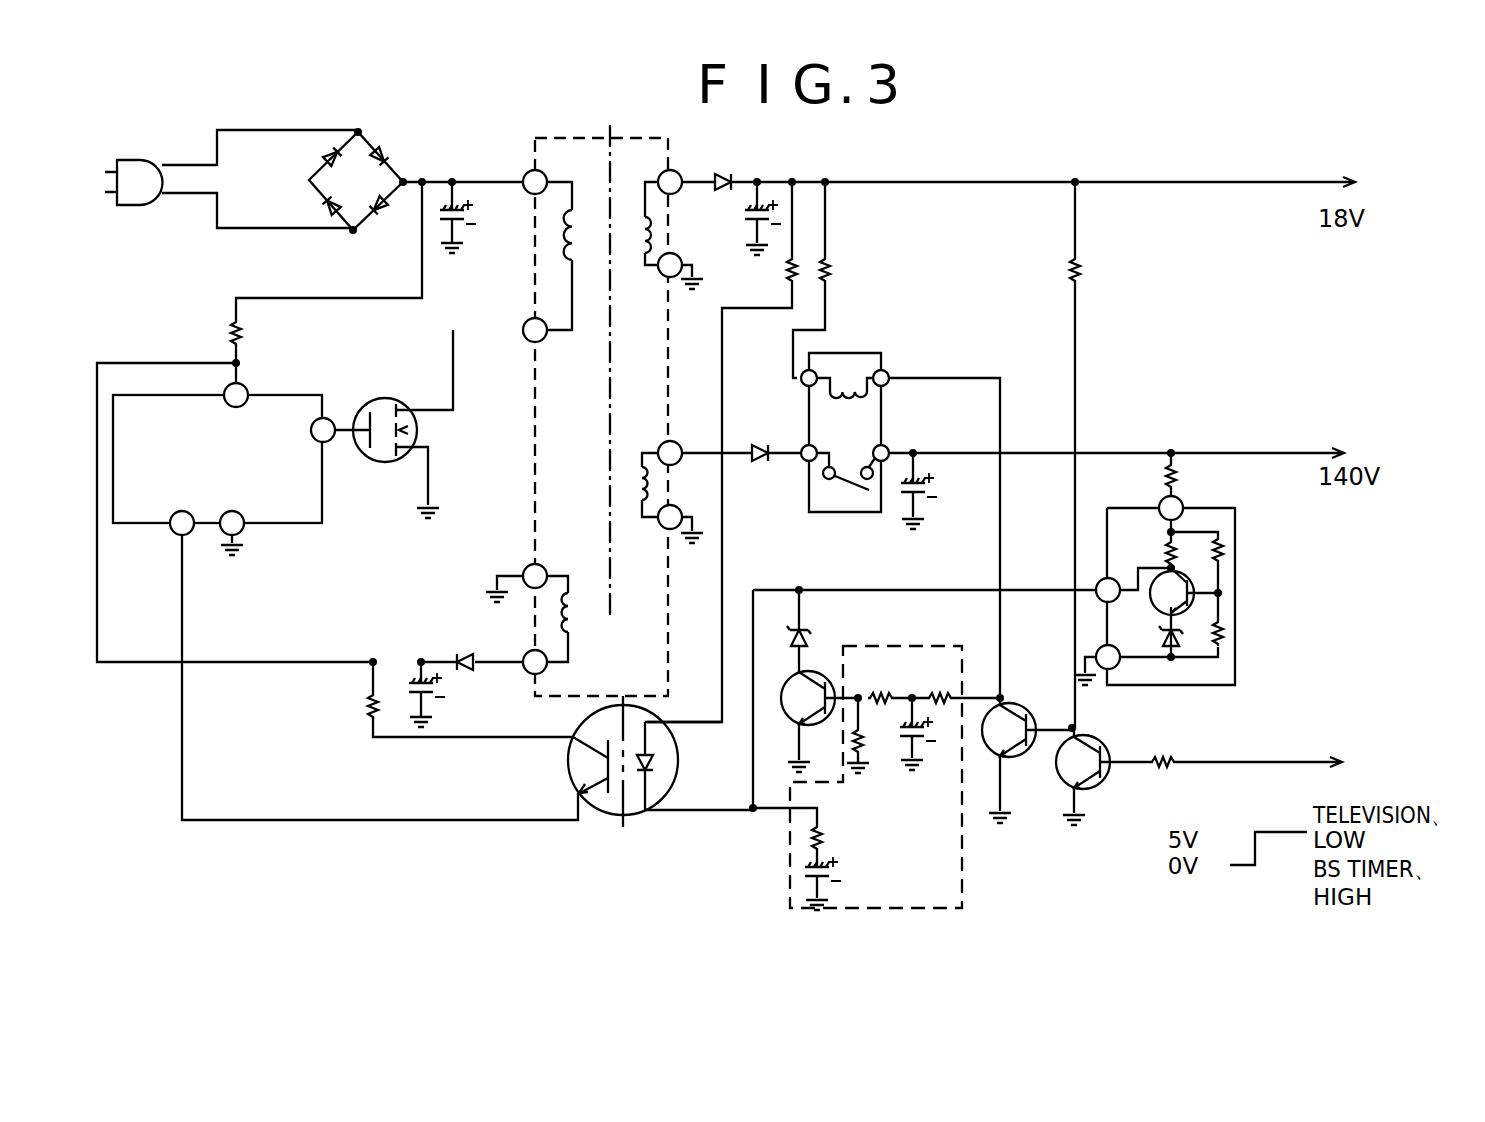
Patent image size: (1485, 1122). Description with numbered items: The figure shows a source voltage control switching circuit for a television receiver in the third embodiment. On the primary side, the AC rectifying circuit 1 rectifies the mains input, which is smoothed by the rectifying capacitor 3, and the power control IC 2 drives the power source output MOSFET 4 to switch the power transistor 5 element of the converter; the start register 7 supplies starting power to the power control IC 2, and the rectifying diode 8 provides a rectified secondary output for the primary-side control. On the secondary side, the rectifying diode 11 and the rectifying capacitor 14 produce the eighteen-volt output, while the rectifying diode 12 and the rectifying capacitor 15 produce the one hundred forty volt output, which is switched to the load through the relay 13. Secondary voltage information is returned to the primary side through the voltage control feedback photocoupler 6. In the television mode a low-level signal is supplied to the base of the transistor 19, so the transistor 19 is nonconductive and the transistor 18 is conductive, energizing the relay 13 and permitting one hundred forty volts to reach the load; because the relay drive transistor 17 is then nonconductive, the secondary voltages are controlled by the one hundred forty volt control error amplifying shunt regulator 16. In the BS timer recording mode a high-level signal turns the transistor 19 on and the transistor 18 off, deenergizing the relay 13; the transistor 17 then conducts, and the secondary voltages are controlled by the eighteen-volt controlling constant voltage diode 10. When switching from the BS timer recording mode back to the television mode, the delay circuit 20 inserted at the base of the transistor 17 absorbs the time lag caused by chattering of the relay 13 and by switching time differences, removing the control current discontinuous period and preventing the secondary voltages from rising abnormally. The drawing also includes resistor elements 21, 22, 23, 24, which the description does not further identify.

The AC rectifying circuit 1 is at (398, 150).
The power control IC 2 is at (322, 393).
The rectifying capacitor 3 is at (470, 208).
The power source output MOSFET 4 is at (418, 426).
The power transistor 5 is at (655, 140).
The voltage control feedback photocoupler 6 is at (678, 768).
The start register 7 is at (230, 338).
The rectifying diode 8 is at (463, 658).
The 18-V controlling constant voltage diode 10 is at (805, 637).
The rectifying diode 11 is at (722, 174).
The rectifying diode 12 is at (758, 460).
The relay 13 is at (883, 418).
The rectifying capacitor 14 is at (744, 208).
The rectifying capacitor 15 is at (935, 487).
The 140-V control error amplifying shunt regulator 16 is at (1235, 675).
The relay drive transistor 17 is at (783, 700).
The transistor 18 is at (1013, 757).
The transistor 19 is at (1088, 790).
The delay circuit 20 is at (963, 870).
The resistor 21 is at (1160, 752).
The resistor 22 is at (786, 268).
The resistor 23 is at (830, 268).
The resistor 24 is at (1080, 268).